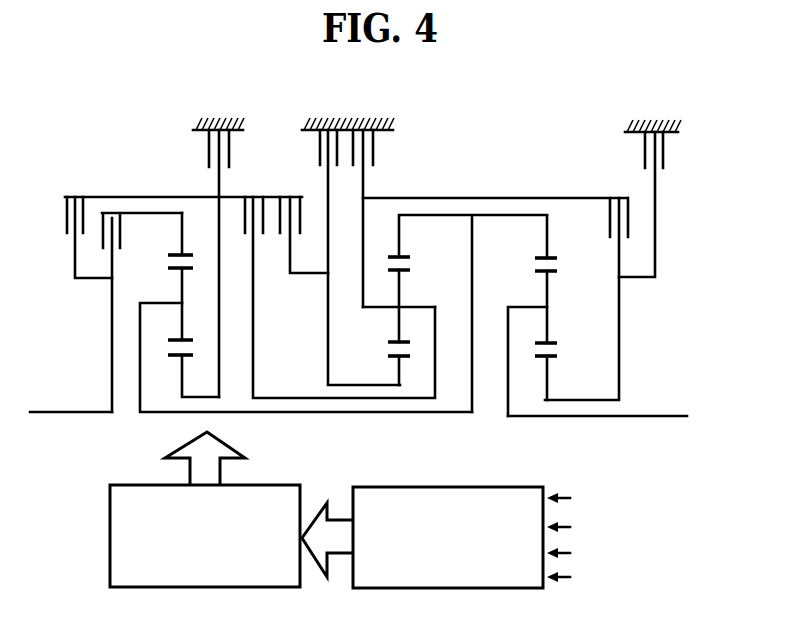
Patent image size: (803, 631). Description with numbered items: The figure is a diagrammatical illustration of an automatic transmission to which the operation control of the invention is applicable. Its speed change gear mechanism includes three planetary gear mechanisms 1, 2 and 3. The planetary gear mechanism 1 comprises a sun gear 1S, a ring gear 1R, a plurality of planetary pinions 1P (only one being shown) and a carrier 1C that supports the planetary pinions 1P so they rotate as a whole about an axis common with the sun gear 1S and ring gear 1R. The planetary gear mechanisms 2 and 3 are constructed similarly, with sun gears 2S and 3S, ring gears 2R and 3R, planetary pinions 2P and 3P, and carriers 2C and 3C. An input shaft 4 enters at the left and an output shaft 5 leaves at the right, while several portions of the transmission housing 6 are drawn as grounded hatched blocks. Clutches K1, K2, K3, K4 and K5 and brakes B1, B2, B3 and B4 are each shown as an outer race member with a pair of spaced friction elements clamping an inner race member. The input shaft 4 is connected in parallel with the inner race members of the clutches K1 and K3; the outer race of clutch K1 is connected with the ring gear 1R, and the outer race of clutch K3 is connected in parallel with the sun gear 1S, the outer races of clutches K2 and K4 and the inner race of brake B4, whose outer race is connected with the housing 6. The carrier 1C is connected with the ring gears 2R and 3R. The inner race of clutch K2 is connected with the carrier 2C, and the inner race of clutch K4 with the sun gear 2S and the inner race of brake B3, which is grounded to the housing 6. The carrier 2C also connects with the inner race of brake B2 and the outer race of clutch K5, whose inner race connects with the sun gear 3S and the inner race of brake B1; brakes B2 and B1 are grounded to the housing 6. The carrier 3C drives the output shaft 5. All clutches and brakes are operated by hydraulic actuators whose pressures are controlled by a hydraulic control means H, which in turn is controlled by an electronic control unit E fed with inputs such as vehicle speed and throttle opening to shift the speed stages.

The planetary gear mechanism 1 is at (287, 338).
The planetary gear mechanism 2 is at (451, 342).
The planetary gear mechanism 3 is at (537, 343).
The input shaft 4 is at (57, 409).
The output shaft 5 is at (673, 413).
The housing 6 is at (198, 124).
The hydraulic control means H is at (209, 588).
The electronic control unit E is at (447, 589).
The clutch K1 is at (142, 312).
The clutch K2 is at (333, 285).
The clutch K3 is at (82, 224).
The clutch K4 is at (302, 223).
The clutch K5 is at (589, 286).
The brake B1 is at (637, 204).
The brake B2 is at (381, 218).
The brake B3 is at (341, 257).
The brake B4 is at (198, 263).
The ring gear 1R is at (191, 234).
The carrier 1C is at (301, 346).
The planetary pinions 1P is at (190, 304).
The sun gear 1S is at (183, 376).
The ring gear 2R is at (467, 313).
The carrier 2C is at (407, 293).
The planetary pinions 2P is at (387, 306).
The sun gear 2S is at (383, 370).
The ring gear 3R is at (531, 237).
The carrier 3C is at (521, 348).
The planetary pinions 3P is at (557, 307).
The sun gear 3S is at (557, 378).